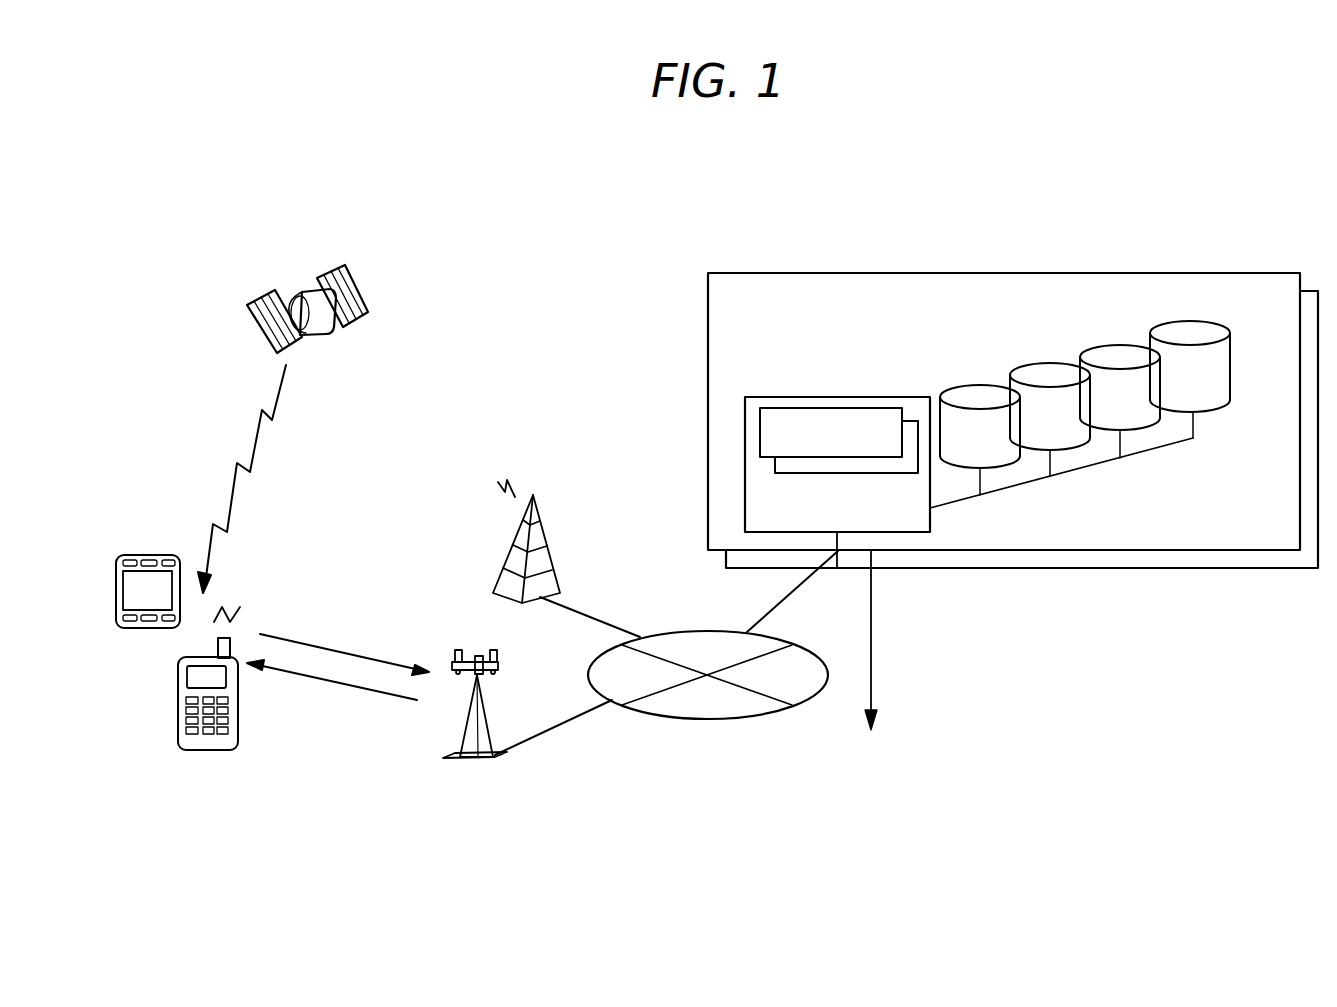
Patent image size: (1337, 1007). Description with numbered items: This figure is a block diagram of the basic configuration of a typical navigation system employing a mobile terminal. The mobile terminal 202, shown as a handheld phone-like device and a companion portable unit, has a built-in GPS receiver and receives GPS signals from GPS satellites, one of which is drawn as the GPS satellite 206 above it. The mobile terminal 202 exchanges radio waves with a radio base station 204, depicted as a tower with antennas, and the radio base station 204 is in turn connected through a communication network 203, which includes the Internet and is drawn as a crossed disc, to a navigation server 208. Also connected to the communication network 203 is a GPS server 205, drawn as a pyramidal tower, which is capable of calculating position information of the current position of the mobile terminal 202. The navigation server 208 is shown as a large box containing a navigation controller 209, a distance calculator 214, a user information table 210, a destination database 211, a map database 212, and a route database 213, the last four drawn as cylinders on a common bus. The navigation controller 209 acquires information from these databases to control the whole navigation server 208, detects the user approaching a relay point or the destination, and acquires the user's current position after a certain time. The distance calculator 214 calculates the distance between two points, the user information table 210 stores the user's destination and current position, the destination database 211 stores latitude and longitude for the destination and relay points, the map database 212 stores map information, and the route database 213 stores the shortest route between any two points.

The mobile terminal 202 is at (140, 630).
The communication network 203 is at (765, 718).
The radio base station 204 is at (490, 760).
The GPS server 205 is at (548, 512).
The GPS satellite 206 is at (305, 287).
The navigation server 208 is at (737, 272).
The navigation controller 209 is at (900, 522).
The user information table 210 is at (995, 463).
The destination database 211 is at (1048, 372).
The map database 212 is at (1138, 425).
The route database 213 is at (1185, 330).
The distance calculator 214 is at (851, 412).